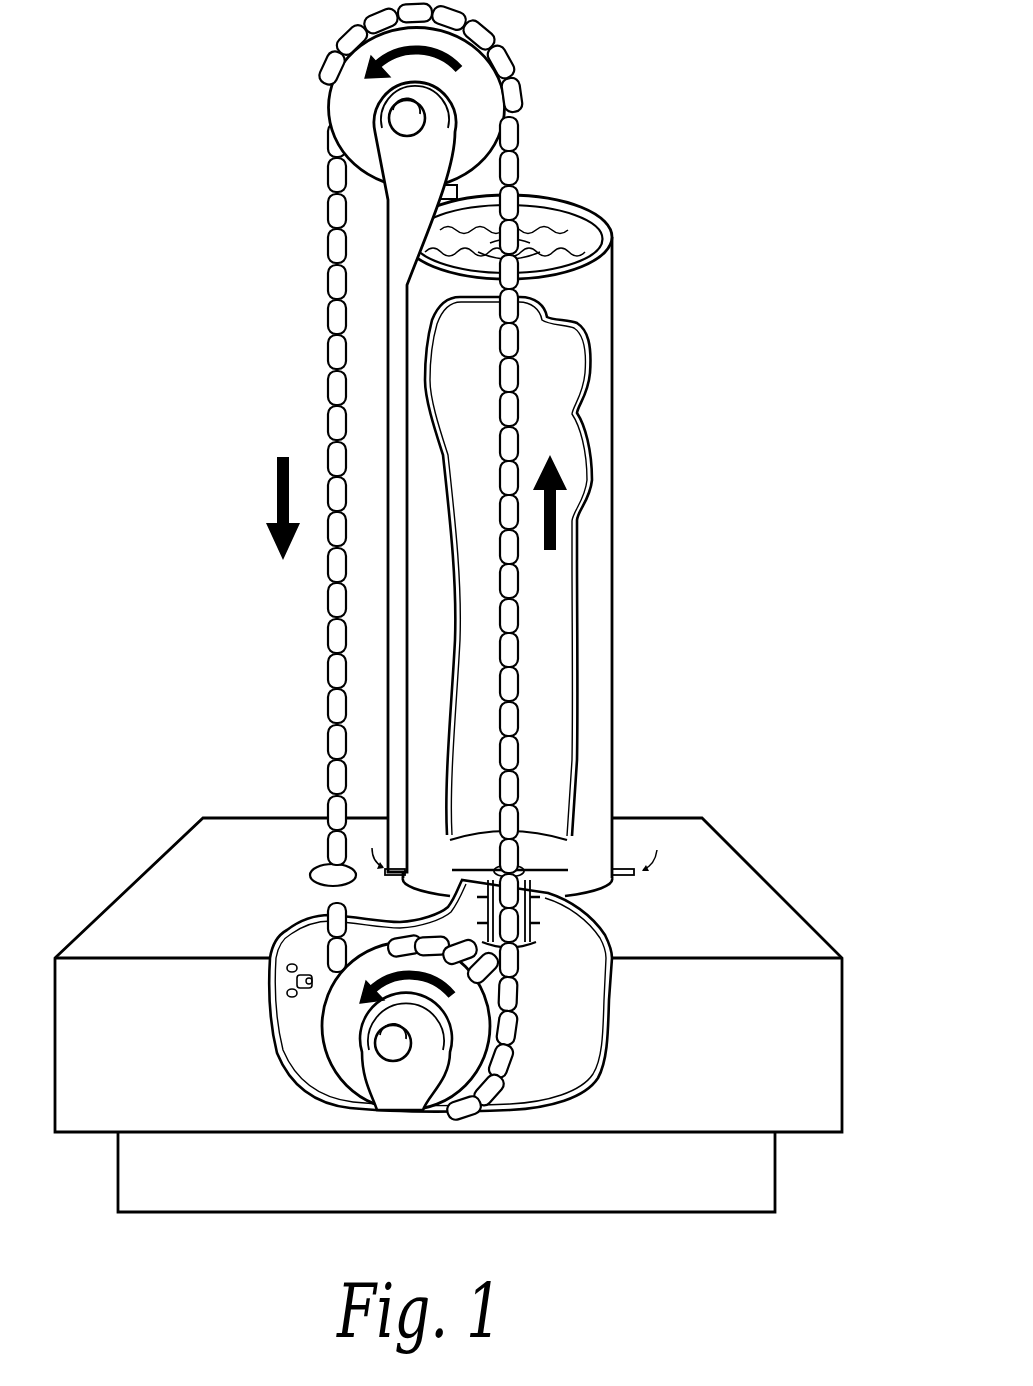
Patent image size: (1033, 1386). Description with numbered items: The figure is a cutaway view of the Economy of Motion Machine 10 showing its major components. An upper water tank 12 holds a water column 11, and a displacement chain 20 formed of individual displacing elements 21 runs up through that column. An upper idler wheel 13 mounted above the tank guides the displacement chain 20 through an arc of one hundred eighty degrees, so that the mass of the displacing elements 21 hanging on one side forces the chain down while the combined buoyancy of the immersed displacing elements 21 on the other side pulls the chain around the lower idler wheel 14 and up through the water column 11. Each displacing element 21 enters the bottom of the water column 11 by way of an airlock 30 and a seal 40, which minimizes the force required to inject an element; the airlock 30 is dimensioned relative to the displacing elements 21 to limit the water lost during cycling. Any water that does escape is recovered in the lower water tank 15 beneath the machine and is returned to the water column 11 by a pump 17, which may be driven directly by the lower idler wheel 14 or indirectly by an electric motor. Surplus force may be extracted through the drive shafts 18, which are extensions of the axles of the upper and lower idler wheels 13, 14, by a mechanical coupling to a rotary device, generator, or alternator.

The Economy of Motion Machine 10 is at (128, 613).
The water column 11 is at (560, 233).
The upper water tank 12 is at (615, 560).
The upper idler wheel 13 is at (348, 90).
The lower idler wheel 14 is at (470, 1040).
The lower water tank 15 is at (437, 1181).
The pump 17 is at (293, 985).
The drive shaft 18 is at (402, 121).
The displacement chain 20 is at (338, 313).
The displacing element 21 is at (520, 398).
The airlock 30 is at (533, 933).
The seal 40 is at (521, 885).